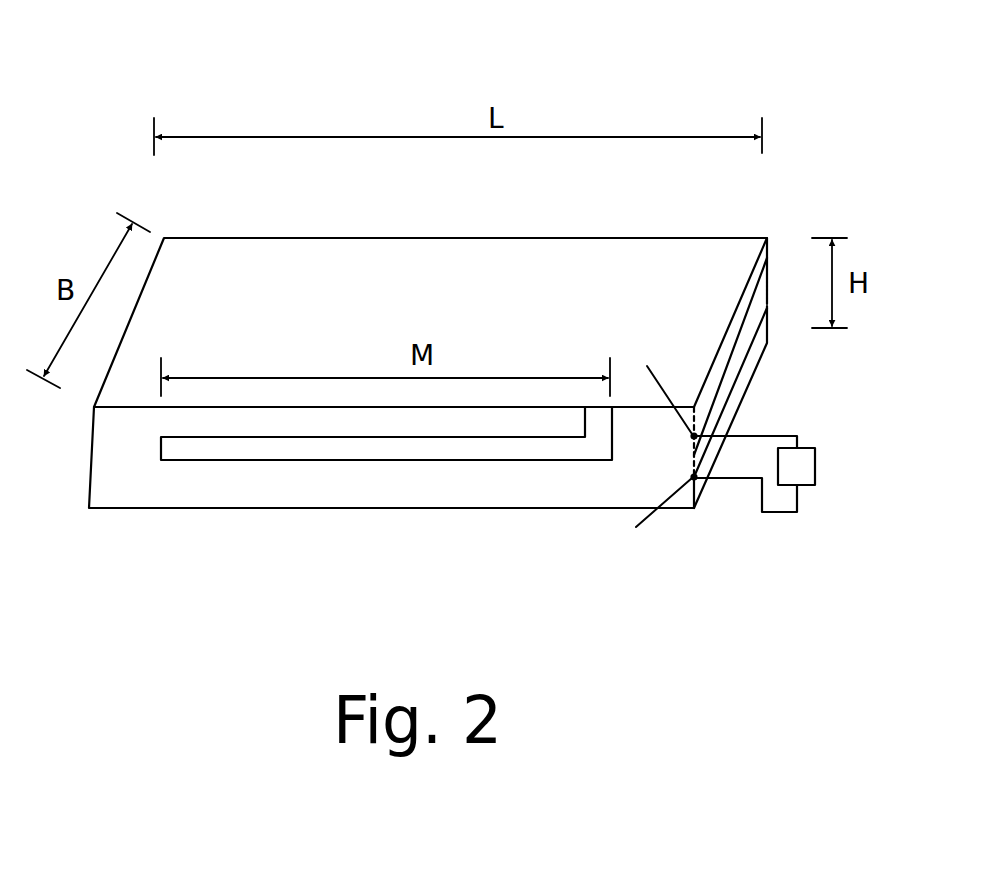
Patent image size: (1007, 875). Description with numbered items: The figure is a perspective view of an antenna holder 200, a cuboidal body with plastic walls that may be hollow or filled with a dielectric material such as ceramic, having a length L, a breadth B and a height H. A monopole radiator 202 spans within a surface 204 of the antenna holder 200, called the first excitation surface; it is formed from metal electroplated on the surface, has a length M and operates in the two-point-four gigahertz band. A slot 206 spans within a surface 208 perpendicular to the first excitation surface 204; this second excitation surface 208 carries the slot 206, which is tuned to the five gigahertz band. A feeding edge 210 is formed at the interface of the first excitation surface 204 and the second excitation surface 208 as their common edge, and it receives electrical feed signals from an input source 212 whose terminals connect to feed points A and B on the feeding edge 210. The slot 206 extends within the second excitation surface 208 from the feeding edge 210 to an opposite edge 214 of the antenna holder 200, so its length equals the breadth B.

The antenna holder 200 is at (481, 303).
The monopole radiator 202 is at (362, 445).
The first excitation surface 204 is at (178, 487).
The slot 206 is at (717, 402).
The second excitation surface 208 is at (720, 353).
The feeding edge 210 is at (701, 490).
The input source 212 is at (802, 475).
The edge 214 is at (770, 257).